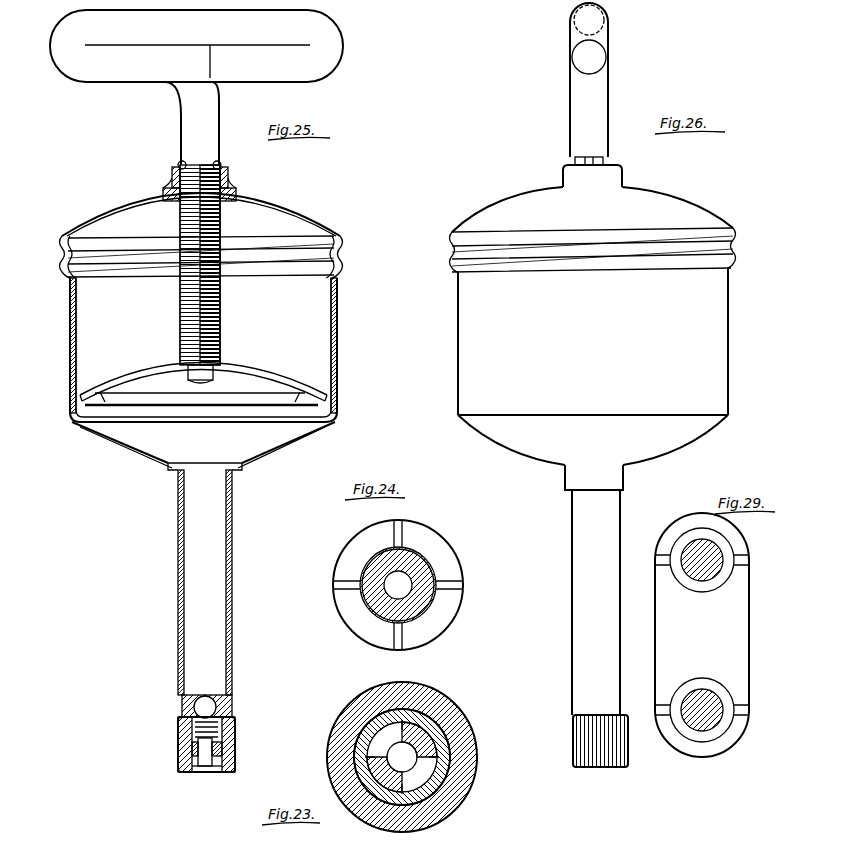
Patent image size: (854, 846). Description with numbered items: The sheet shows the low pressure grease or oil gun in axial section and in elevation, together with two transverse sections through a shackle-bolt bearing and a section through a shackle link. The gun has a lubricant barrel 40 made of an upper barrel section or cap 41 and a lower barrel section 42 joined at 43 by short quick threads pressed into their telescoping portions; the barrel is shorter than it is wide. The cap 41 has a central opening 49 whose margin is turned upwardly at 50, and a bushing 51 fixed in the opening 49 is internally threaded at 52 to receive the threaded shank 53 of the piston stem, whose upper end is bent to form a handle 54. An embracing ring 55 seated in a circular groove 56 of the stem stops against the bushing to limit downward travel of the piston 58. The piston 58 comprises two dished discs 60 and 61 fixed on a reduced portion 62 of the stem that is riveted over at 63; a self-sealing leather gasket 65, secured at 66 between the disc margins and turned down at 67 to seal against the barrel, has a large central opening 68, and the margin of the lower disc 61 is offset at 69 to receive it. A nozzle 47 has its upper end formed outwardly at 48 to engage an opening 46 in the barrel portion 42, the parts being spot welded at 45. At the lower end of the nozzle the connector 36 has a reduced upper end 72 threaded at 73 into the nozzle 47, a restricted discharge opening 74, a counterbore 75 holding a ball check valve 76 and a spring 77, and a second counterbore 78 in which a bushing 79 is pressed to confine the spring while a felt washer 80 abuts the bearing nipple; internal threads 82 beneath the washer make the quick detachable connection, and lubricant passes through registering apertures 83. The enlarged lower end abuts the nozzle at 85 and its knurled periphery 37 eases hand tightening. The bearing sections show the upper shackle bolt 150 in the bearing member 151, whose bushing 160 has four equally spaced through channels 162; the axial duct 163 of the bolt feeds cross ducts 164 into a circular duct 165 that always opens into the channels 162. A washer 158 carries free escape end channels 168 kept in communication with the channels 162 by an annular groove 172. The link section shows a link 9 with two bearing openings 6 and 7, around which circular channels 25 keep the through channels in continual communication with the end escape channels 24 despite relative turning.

In FIG. 25, the handle 54 is at (343, 46).
In FIG. 26, the handle 54 is at (595, 57).
In FIG. 25, the threaded shank of piston stem 53 is at (222, 305).
In FIG. 26, the threaded shank of piston stem 53 is at (606, 100).
In FIG. 25, the embracing ring 55 is at (182, 161).
In FIG. 26, the embracing ring 55 is at (605, 161).
In FIG. 25, the circular groove 56 is at (217, 161).
In FIG. 25, the upturned margin 50 is at (229, 177).
In FIG. 26, the upturned margin 50 is at (575, 181).
In FIG. 25, the internal thread of bushing 52 is at (176, 180).
In FIG. 25, the bushing 51 is at (170, 202).
In FIG. 26, the bushing 51 is at (575, 165).
In FIG. 25, the central opening 49 is at (243, 197).
In FIG. 25, the upper barrel section 41 is at (112, 211).
In FIG. 26, the upper barrel section 41 is at (690, 215).
In FIG. 25, the quick thread connection 43 is at (62, 265).
In FIG. 26, the quick thread connection 43 is at (735, 246).
In FIG. 25, the lubricant barrel 40 is at (67, 340).
In FIG. 26, the lubricant barrel 40 is at (715, 345).
In FIG. 25, the lower barrel section 42 is at (70, 372).
In FIG. 25, the piston 58 is at (266, 380).
In FIG. 25, the upper piston disc 60 is at (140, 393).
In FIG. 25, the reduced portion of piston stem 62 is at (214, 372).
In FIG. 25, the riveted end 63 is at (205, 382).
In FIG. 25, the lower piston disc 61 is at (162, 401).
In FIG. 25, the gasket securing point 66 is at (300, 403).
In FIG. 25, the self-sealing gasket 65 is at (336, 402).
In FIG. 25, the turned-down gasket edge 67 is at (340, 412).
In FIG. 25, the central opening of gasket 68 is at (300, 400).
In FIG. 25, the offset margin of lower disc 69 is at (110, 423).
In FIG. 25, the spot weld 45 is at (170, 486).
In FIG. 25, the outwardly formed nozzle end 48 is at (241, 477).
In FIG. 25, the nozzle opening in barrel 46 is at (178, 493).
In FIG. 26, the nozzle opening in barrel 46 is at (615, 480).
In FIG. 25, the nozzle 47 is at (210, 583).
In FIG. 26, the nozzle 47 is at (576, 645).
In FIG. 25, the reduced upper end of fitting 72 is at (225, 700).
In FIG. 25, the discharge opening 74 is at (205, 698).
In FIG. 25, the ball check valve 76 is at (185, 700).
In FIG. 25, the thread of fitting upper end 73 is at (232, 710).
In FIG. 25, the shoulder abutment 85 is at (238, 717).
In FIG. 25, the connector 36 is at (178, 745).
In FIG. 25, the spring 77 is at (236, 720).
In FIG. 25, the bushing 79 is at (236, 735).
In FIG. 25, the counterbore 75 is at (182, 715).
In FIG. 25, the second counterbore 78 is at (222, 745).
In FIG. 25, the registering apertures 83 is at (210, 766).
In FIG. 25, the felt washer 80 is at (195, 762).
In FIG. 25, the internal threads 82 is at (218, 770).
In FIG. 24, the washer 158 is at (436, 540).
In FIG. 24, the annular groove 172 is at (426, 562).
In FIG. 24, the axial duct 163 is at (395, 598).
In FIG. 23, the axial duct 163 is at (365, 742).
In FIG. 24, the free escape end channels 168 is at (400, 527).
In FIG. 24, the shackle bolt 150 is at (375, 572).
In FIG. 23, the shackle bolt 150 is at (430, 780).
In FIG. 23, the bearing member 151 is at (352, 713).
In FIG. 23, the longitudinal through channels 162 is at (400, 700).
In FIG. 23, the cross ducts 164 is at (425, 730).
In FIG. 23, the circular duct 165 is at (450, 748).
In FIG. 23, the bushing 160 is at (355, 774).
In FIG. 26, the knurled cap 37 is at (573, 745).
In FIG. 29, the link body 9 is at (736, 608).
In FIG. 29, the circular channels 25 is at (716, 541).
In FIG. 29, the upper pin 6 is at (690, 570).
In FIG. 29, the lower pin 7 is at (706, 705).
In FIG. 29, the end escape channels 24 is at (660, 560).